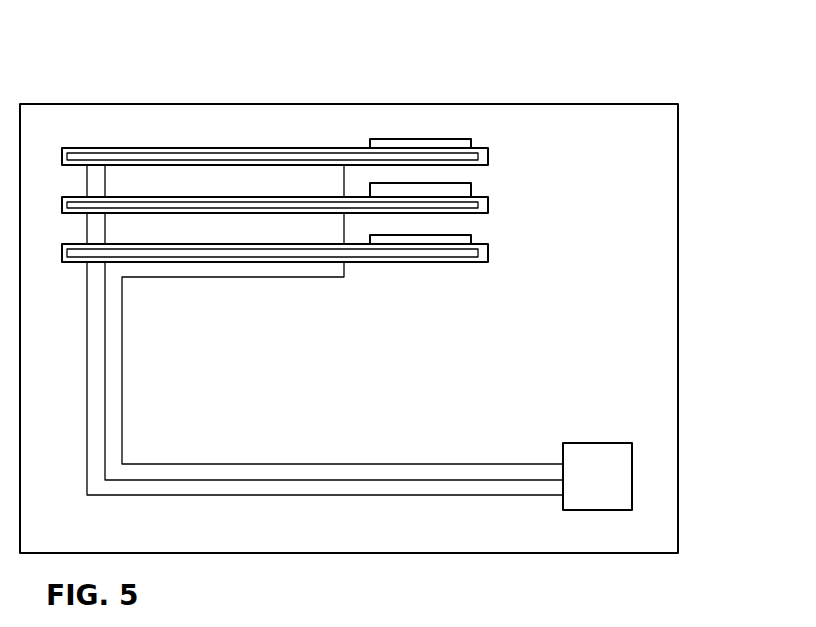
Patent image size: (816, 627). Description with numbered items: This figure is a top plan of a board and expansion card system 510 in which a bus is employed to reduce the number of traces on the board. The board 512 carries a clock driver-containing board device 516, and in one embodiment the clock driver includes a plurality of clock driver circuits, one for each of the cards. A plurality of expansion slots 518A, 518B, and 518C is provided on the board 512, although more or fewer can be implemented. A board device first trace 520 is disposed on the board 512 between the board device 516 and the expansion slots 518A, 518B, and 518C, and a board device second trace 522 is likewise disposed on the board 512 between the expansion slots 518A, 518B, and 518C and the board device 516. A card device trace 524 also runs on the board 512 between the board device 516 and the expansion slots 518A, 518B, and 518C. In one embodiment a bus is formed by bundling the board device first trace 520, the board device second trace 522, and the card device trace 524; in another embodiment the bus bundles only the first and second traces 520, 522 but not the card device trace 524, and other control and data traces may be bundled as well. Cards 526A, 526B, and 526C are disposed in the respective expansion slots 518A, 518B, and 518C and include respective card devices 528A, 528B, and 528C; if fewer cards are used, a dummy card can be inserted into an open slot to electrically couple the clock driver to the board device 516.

The sensor device 510 is at (584, 85).
The board 512 is at (645, 123).
The board device 516 is at (585, 482).
The expansion slot 518A is at (274, 94).
The expansion slot 518B is at (275, 118).
The expansion slot 518C is at (275, 143).
The board device first trace 520 is at (288, 480).
The board device second trace 522 is at (216, 493).
The card device trace 524 is at (369, 464).
The card 526A is at (147, 257).
The card 526B is at (245, 205).
The card 526C is at (342, 158).
The card device 528A is at (375, 242).
The card device 528B is at (403, 192).
The card device 528C is at (437, 147).